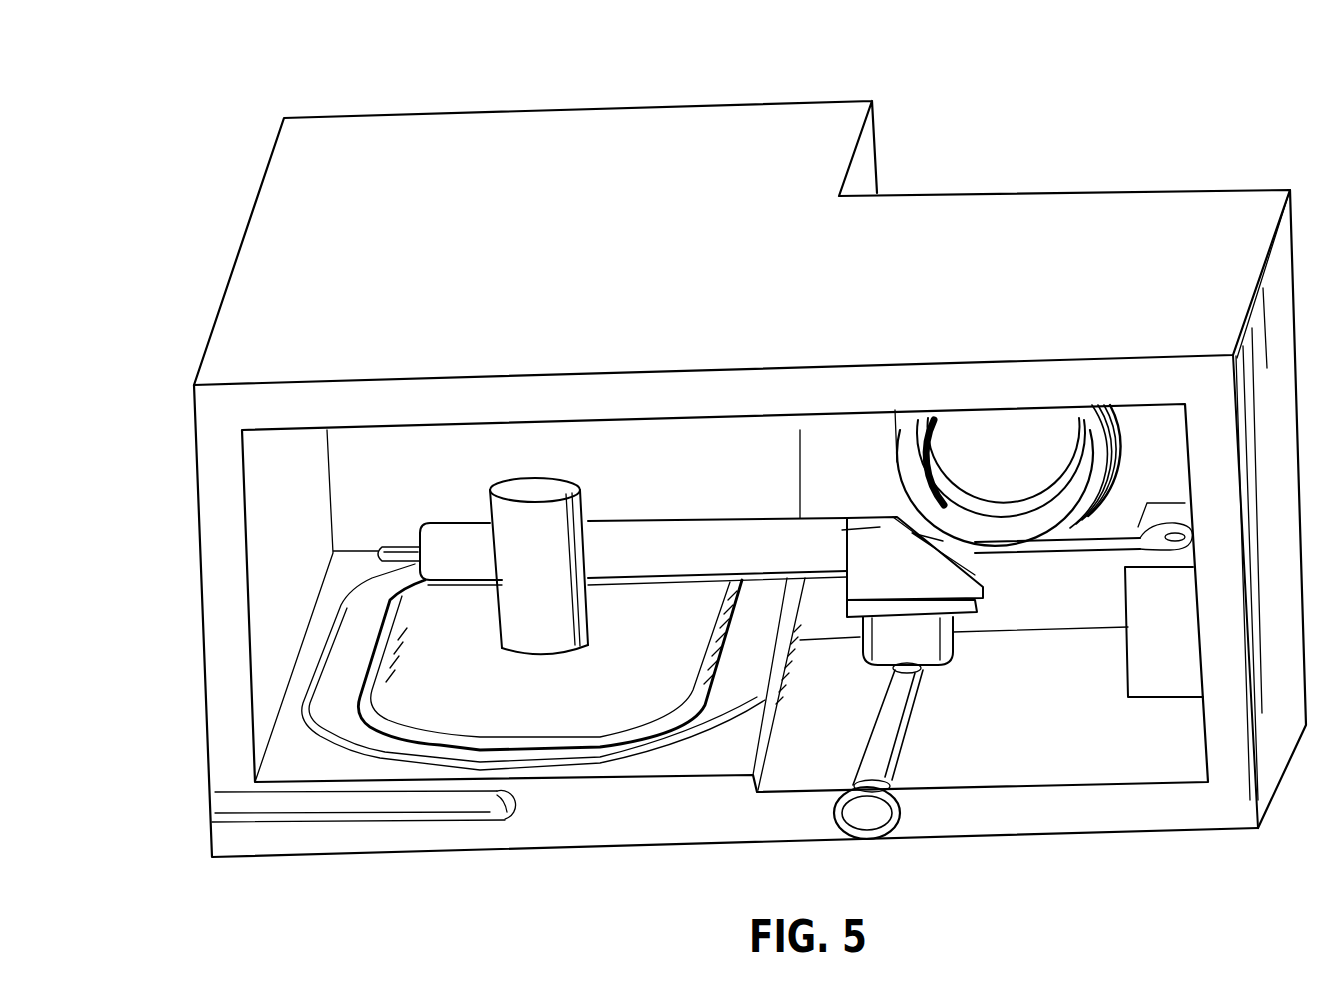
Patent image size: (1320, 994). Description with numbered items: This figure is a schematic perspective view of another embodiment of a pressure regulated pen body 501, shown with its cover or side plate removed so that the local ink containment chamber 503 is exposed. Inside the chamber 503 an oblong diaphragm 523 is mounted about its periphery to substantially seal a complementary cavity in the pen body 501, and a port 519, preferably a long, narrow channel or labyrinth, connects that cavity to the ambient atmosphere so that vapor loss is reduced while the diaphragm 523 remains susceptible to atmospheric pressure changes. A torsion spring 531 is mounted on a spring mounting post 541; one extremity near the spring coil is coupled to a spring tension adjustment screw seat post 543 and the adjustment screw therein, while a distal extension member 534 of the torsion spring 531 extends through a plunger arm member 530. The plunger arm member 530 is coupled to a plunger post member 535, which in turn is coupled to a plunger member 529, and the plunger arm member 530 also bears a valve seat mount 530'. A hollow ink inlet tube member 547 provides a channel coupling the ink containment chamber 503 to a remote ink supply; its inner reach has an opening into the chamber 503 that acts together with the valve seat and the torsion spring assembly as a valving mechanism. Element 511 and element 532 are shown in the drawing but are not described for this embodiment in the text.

The pressure regulated pen body 501 is at (770, 135).
The local ink containment chamber 503 is at (1117, 770).
The pivot shaft 511 is at (905, 648).
The port 519 is at (227, 805).
The oblong diaphragm 523 is at (338, 652).
The plunger member 529 is at (527, 712).
The plunger arm member 530 is at (633, 531).
The valve seat mount 530' is at (950, 567).
The torsion spring 531 is at (903, 476).
The rod 532 is at (1175, 533).
The distal extension member 534 is at (387, 545).
The plunger post member 535 is at (540, 487).
The spring mounting post 541 is at (1105, 415).
The spring tension adjustment screw seat post 543 is at (1160, 645).
The hollow ink inlet tube member 547 is at (868, 822).